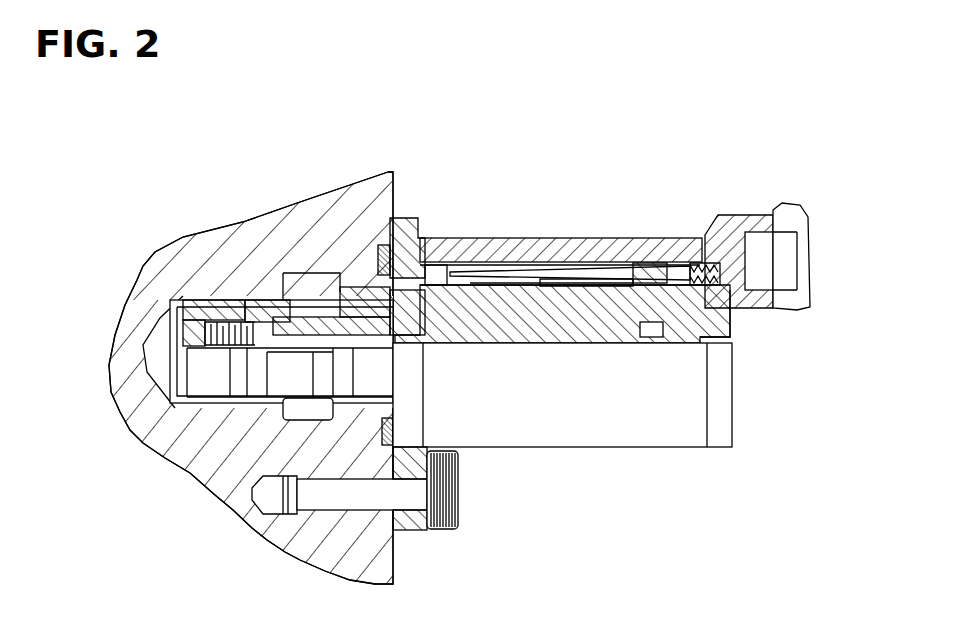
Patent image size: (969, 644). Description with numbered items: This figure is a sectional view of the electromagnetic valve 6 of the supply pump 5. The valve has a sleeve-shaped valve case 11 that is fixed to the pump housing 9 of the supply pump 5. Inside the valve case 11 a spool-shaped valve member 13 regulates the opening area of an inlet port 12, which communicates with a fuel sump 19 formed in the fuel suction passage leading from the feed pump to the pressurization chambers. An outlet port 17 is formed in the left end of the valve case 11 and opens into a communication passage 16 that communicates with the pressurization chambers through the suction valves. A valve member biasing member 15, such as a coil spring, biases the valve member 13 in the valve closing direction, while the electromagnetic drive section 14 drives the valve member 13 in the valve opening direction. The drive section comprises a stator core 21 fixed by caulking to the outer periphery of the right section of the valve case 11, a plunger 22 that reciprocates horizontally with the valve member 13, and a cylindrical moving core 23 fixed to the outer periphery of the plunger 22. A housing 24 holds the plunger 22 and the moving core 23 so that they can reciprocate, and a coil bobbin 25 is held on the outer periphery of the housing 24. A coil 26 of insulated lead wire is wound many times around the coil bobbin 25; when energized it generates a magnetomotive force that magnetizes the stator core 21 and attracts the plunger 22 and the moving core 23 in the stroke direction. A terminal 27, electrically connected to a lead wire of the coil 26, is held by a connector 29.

The supply pump 5 is at (395, 164).
The electromagnetic valve 6 is at (718, 173).
The pump housing 9 is at (237, 225).
The valve case 11 is at (185, 300).
The inlet port 12 is at (307, 280).
The valve member 13 is at (347, 272).
The electromagnetic drive section 14 is at (612, 226).
The valve member biasing member 15 is at (213, 300).
The communication passage 16 is at (160, 323).
The outlet port 17 is at (182, 343).
The fuel sump 19 is at (310, 277).
The stator core 21 is at (450, 268).
The plunger 22 is at (518, 290).
The moving core 23 is at (558, 296).
The housing 24 is at (727, 327).
The coil bobbin 25 is at (653, 282).
The coil 26 is at (483, 262).
The terminal 27 is at (797, 268).
The connector 29 is at (762, 250).